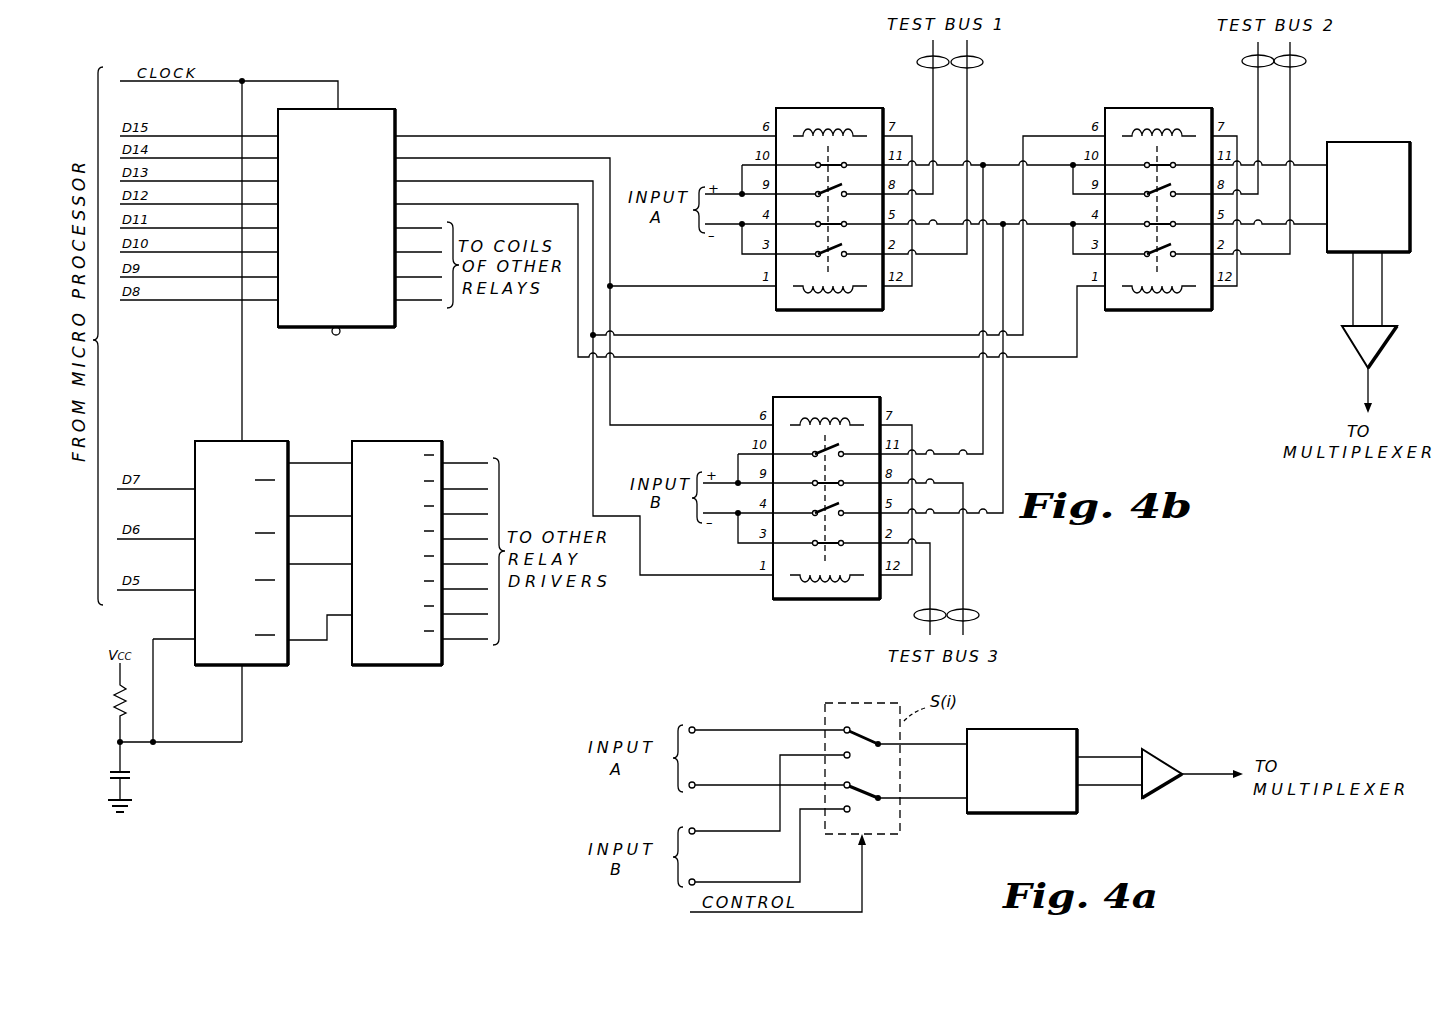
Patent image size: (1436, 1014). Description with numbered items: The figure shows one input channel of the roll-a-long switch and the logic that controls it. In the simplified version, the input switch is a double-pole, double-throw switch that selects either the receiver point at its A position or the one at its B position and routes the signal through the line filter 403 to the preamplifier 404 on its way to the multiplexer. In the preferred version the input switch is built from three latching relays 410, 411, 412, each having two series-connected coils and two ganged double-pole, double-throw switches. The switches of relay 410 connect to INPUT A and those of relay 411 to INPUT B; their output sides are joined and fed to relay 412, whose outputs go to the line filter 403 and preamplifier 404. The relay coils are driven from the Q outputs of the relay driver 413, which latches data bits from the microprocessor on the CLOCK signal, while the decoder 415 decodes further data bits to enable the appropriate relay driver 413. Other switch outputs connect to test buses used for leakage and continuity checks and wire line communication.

In FIG. 4B, the line filter 403 is at (1368, 142).
In FIG. 4A, the line filter 403 is at (1077, 729).
In FIG. 4B, the preamplifier 404 is at (1343, 333).
In FIG. 4A, the preamplifier 404 is at (1157, 787).
In FIG. 4B, the latching relay 410 is at (860, 108).
In FIG. 4B, the latching relay 411 is at (867, 397).
In FIG. 4B, the latching relay 412 is at (1183, 108).
In FIG. 4B, the relay driver 413 is at (392, 108).
In FIG. 4B, the decoder 415 is at (408, 667).